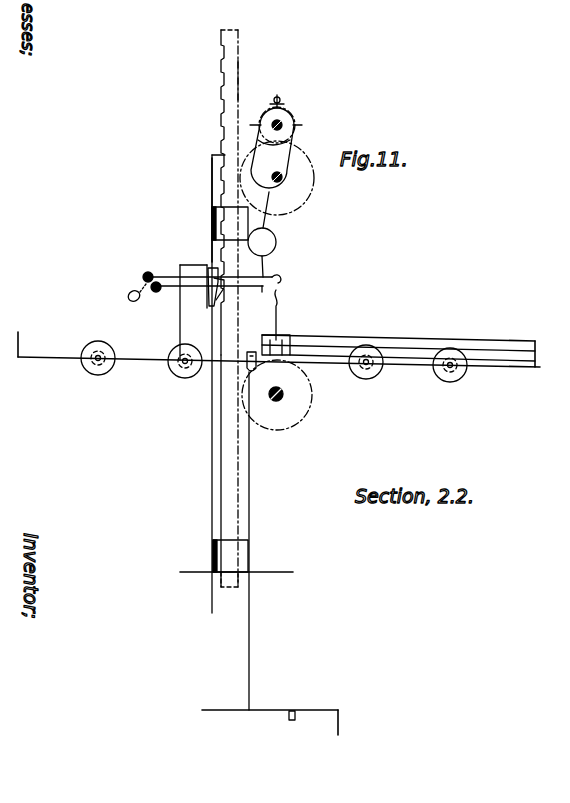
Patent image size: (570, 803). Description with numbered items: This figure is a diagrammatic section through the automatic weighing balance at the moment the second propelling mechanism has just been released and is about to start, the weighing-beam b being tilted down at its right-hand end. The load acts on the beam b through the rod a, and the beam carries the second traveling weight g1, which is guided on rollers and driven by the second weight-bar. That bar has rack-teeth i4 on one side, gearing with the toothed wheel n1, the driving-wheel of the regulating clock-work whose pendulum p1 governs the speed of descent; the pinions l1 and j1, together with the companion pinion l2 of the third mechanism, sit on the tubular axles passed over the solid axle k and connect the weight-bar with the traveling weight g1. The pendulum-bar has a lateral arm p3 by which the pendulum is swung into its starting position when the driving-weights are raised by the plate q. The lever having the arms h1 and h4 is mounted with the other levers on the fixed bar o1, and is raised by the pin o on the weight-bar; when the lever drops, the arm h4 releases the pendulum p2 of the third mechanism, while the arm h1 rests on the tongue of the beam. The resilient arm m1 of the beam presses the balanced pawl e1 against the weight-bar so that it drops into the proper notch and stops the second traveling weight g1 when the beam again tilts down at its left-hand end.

The rod a is at (259, 445).
The weighing-beam b is at (418, 367).
The plate q is at (291, 719).
The rack-teeth i4 is at (211, 308).
The pinion l1 is at (243, 80).
The pinion l2 is at (278, 320).
The pendulum p2 is at (204, 210).
The pendulum p1 is at (271, 234).
The lateral arm p3 is at (272, 119).
The toothed wheel n1 is at (277, 162).
The lever arm h1 is at (224, 275).
The lever arm h4 is at (213, 294).
The pin o is at (220, 284).
The bar o1 is at (143, 289).
The resilient arm m1 is at (186, 312).
The pawl e1 is at (212, 298).
The traveling weight g1 is at (398, 345).
The axle k is at (287, 398).
The pinion j1 is at (277, 401).